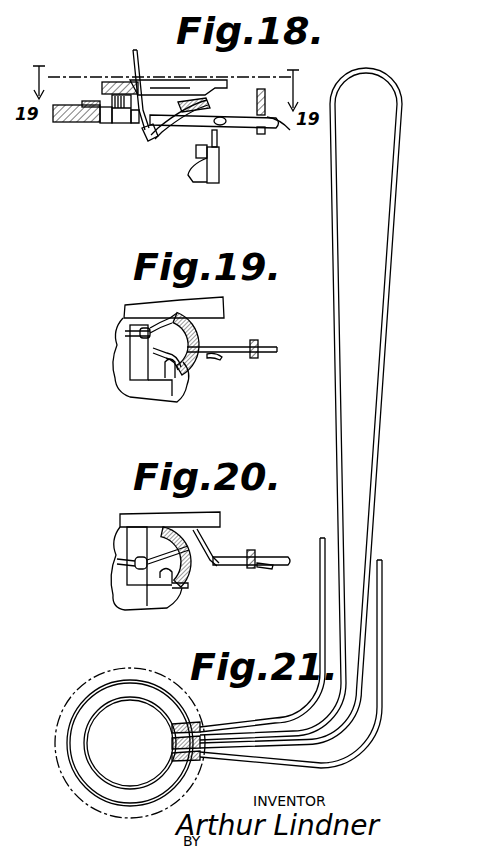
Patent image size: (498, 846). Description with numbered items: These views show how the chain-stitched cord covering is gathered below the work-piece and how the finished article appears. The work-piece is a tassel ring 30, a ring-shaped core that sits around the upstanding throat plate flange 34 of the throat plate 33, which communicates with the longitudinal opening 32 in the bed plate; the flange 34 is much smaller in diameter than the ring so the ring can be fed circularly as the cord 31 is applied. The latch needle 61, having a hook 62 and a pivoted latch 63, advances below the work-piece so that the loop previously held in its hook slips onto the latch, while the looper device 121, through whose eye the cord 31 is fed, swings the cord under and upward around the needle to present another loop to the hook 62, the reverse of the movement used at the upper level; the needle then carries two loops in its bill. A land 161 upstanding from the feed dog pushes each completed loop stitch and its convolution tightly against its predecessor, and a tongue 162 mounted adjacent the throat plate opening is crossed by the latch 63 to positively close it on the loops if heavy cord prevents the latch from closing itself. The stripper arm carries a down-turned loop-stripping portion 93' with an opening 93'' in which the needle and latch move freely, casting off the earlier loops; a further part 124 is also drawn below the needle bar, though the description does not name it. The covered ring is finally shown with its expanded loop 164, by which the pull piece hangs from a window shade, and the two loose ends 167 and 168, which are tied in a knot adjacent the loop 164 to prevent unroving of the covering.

In FIG. 18, the tassel ring 30 is at (99, 106).
In FIG. 19, the tassel ring 30 is at (187, 372).
In FIG. 20, the tassel ring 30 is at (183, 585).
In FIG. 21, the tassel ring 30 is at (102, 707).
In FIG. 18, the cord 31 is at (136, 54).
In FIG. 19, the cord 31 is at (125, 335).
In FIG. 20, the cord 31 is at (120, 567).
In FIG. 21, the cord 31 is at (210, 742).
In FIG. 18, the opening 32 is at (107, 123).
In FIG. 18, the throat plate 33 is at (85, 122).
In FIG. 18, the throat plate flange 34 is at (128, 112).
In FIG. 19, the throat plate flange 34 is at (150, 316).
In FIG. 18, the latch needle 61 is at (232, 119).
In FIG. 19, the latch needle 61 is at (272, 346).
In FIG. 20, the latch needle 61 is at (293, 550).
In FIG. 18, the hook 62 is at (152, 93).
In FIG. 19, the hook 62 is at (173, 333).
In FIG. 20, the hook 62 is at (217, 557).
In FIG. 18, the latch 63 is at (219, 116).
In FIG. 19, the latch 63 is at (218, 360).
In FIG. 20, the latch 63 is at (264, 568).
In FIG. 18, the loop-stripping portion 93' is at (266, 94).
In FIG. 19, the loop-stripping portion 93' is at (275, 330).
In FIG. 20, the loop-stripping portion 93' is at (264, 531).
In FIG. 18, the opening 93'' is at (293, 134).
In FIG. 18, the looper device 121 is at (150, 133).
In FIG. 19, the looper device 121 is at (153, 340).
In FIG. 20, the looper device 121 is at (140, 550).
In FIG. 18, the foot block 124 is at (198, 171).
In FIG. 18, the land 161 is at (218, 141).
In FIG. 19, the tongue 162 is at (178, 370).
In FIG. 20, the tongue 162 is at (197, 582).
In FIG. 21, the expanded loop 164 is at (388, 287).
In FIG. 20, the loose end 167 is at (321, 540).
In FIG. 21, the loose end 168 is at (383, 577).